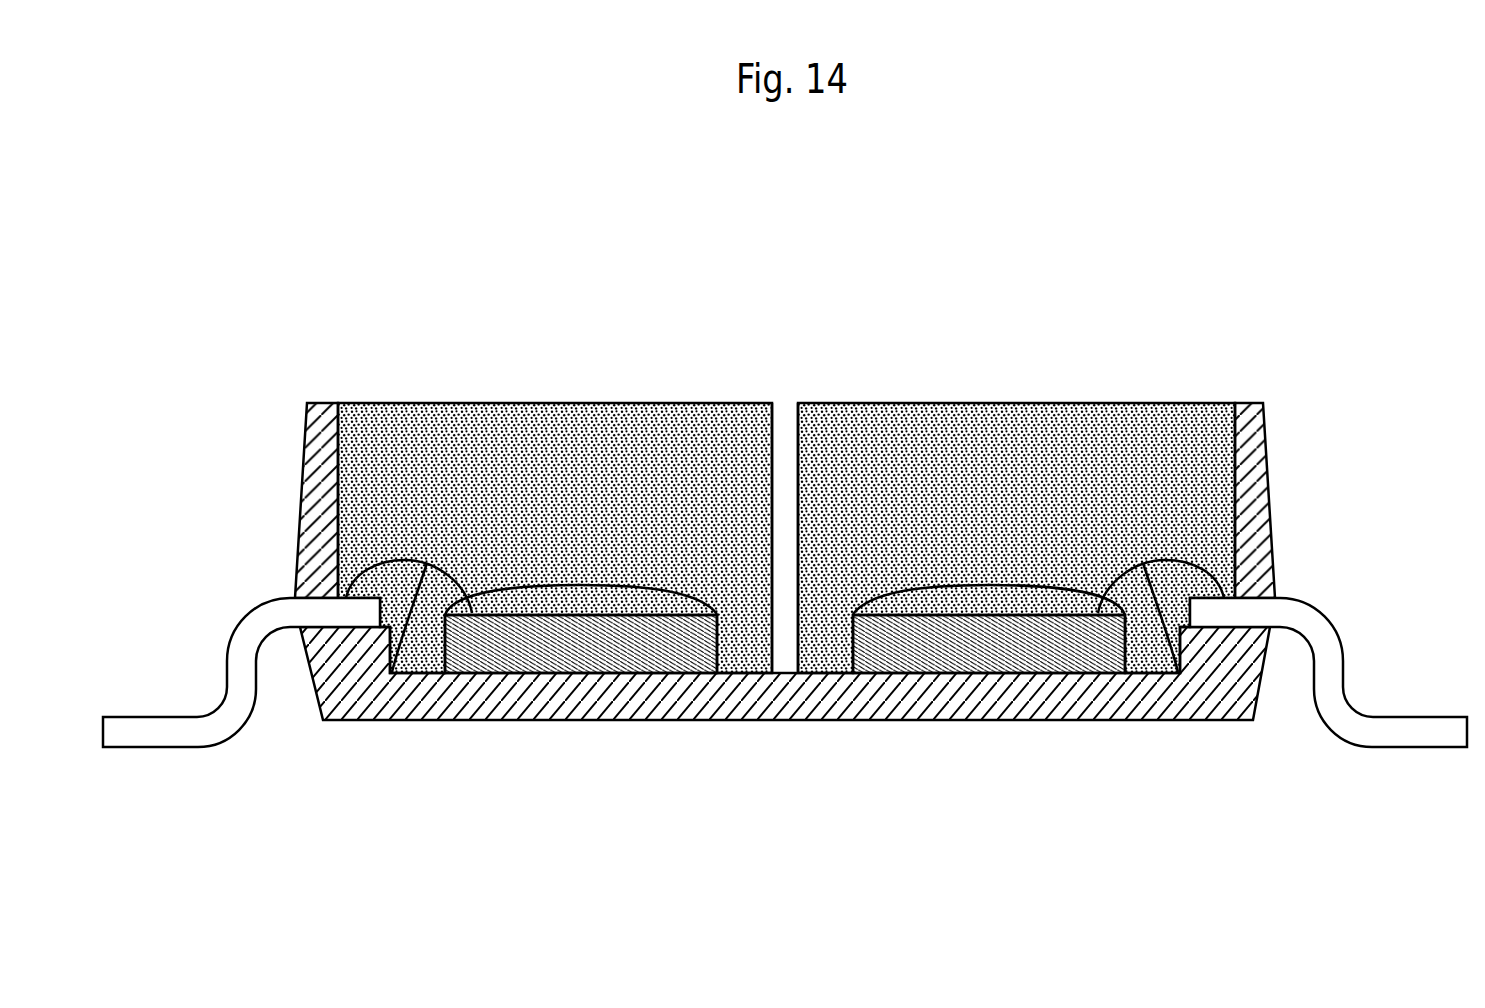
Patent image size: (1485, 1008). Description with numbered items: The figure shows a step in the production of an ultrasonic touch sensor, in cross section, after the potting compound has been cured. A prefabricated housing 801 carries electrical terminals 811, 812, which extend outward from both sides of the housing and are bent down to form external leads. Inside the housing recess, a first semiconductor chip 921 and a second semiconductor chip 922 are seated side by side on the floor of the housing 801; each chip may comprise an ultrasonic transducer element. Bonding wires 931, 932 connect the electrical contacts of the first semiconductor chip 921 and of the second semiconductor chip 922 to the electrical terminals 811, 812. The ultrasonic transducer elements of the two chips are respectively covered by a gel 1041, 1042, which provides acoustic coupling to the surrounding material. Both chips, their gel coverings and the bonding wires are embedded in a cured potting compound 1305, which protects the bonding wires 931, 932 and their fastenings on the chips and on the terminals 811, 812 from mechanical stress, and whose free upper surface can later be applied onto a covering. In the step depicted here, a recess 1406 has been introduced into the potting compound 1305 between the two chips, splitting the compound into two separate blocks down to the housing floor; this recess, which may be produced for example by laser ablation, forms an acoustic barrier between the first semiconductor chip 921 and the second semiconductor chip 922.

The prefabricated housing 801 is at (760, 697).
The electrical terminal 811 is at (122, 733).
The electrical terminal 812 is at (1425, 735).
The first semiconductor chip 921 is at (478, 650).
The second semiconductor chip 922 is at (1105, 652).
The bonding wire 931 is at (392, 673).
The bonding wire 932 is at (1178, 673).
The gel 1041 is at (613, 603).
The gel 1042 is at (1048, 600).
The potting compound 1305 is at (740, 660).
The recess 1406 is at (782, 598).